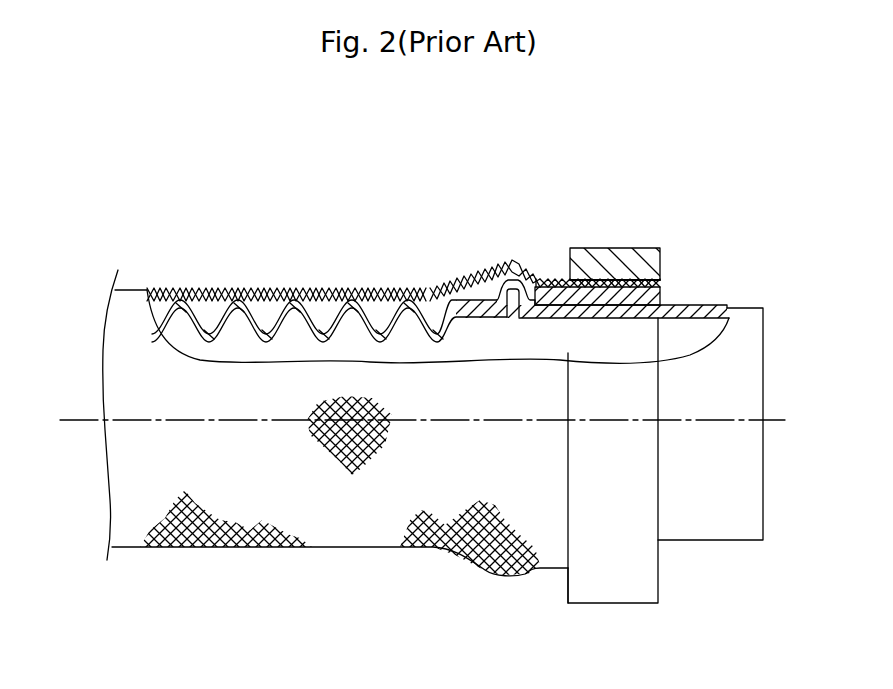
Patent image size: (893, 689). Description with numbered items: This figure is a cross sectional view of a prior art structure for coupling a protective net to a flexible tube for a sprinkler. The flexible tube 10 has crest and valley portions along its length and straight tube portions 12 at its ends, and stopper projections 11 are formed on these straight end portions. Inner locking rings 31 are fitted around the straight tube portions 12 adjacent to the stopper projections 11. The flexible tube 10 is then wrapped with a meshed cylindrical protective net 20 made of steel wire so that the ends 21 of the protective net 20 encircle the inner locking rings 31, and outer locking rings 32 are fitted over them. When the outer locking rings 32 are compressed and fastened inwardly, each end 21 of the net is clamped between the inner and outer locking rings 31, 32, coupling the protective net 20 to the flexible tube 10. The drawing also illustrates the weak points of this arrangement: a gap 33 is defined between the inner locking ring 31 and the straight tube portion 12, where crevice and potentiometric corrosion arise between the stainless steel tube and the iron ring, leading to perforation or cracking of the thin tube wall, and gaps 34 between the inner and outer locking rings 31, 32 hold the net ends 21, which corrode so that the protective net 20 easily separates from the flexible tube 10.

The flexible tube 10 is at (233, 300).
The protective net 20 is at (316, 290).
The stopper projections 11 is at (500, 283).
The straight tube portions 12 is at (606, 318).
The ends of the protective net 21 is at (623, 280).
The inner locking rings 31 is at (542, 282).
The outer locking rings 32 is at (583, 257).
The gap 33 is at (650, 318).
The gaps 34 is at (662, 285).